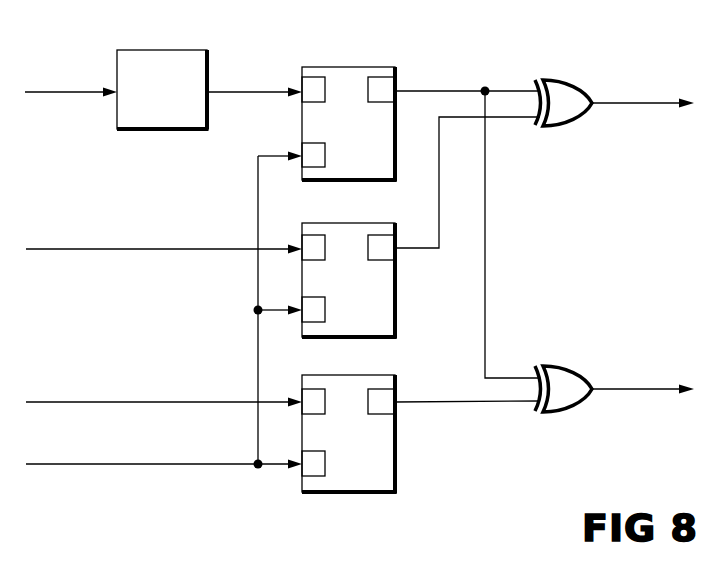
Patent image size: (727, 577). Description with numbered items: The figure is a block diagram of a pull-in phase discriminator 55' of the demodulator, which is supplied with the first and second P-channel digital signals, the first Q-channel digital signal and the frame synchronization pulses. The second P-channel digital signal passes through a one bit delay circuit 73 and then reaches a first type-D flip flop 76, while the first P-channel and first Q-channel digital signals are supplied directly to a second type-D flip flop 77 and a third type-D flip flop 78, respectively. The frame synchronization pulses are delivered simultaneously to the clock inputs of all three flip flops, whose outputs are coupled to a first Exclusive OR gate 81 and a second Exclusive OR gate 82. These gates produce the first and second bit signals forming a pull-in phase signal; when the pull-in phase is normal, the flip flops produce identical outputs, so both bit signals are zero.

The pull-in phase discriminator 55' is at (359, 304).
The one bit delay circuit 73 is at (180, 50).
The first type-D flip flop 76 is at (371, 67).
The second type-D flip flop 77 is at (371, 223).
The third type-D flip flop 78 is at (371, 375).
The first Exclusive OR gate 81 is at (586, 65).
The second Exclusive OR gate 82 is at (586, 351).